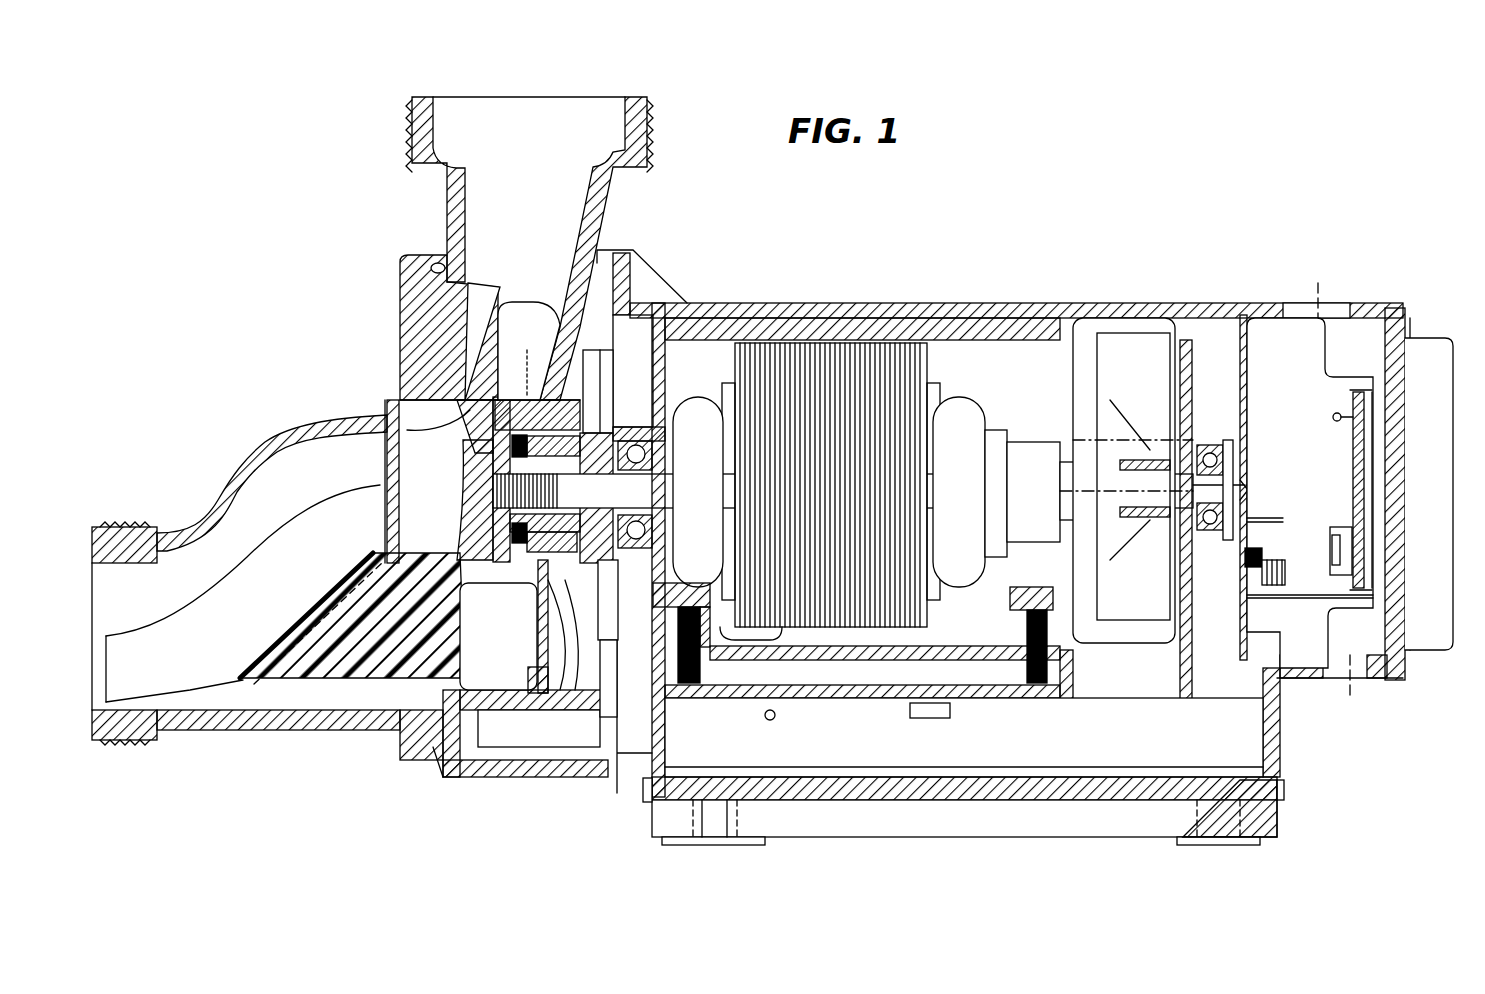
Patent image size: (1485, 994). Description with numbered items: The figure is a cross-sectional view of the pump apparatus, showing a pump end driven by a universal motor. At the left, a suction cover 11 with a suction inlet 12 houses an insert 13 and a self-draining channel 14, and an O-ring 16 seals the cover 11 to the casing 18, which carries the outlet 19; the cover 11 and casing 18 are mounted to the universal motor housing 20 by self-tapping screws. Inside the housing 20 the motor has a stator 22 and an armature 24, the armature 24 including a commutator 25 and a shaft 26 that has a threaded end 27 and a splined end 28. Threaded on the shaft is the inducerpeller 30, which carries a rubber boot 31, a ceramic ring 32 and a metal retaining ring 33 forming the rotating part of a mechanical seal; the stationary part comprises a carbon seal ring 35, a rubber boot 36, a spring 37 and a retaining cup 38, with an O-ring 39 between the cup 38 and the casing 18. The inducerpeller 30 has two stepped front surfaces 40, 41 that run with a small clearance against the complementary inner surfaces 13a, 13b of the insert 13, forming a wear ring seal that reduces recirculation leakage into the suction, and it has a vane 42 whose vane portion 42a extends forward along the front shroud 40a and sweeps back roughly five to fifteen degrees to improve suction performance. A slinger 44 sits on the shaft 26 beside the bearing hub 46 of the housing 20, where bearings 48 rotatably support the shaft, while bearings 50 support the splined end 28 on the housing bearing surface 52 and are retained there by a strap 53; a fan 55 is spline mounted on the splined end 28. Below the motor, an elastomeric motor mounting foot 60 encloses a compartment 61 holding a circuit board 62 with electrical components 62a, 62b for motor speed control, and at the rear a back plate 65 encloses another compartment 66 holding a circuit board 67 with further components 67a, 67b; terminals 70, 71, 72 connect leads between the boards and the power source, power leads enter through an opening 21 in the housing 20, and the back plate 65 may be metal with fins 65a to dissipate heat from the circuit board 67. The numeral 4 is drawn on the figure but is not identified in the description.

The section line 4 is at (1169, 514).
The suction cover 11 is at (213, 493).
The suction inlet 12 is at (265, 478).
The insert 13 is at (310, 603).
The inner surface of insert 13a is at (382, 557).
The inner surface of insert 13b is at (480, 587).
The self-draining channel 14 is at (243, 680).
The O-ring 16 is at (433, 760).
The casing 18 is at (447, 205).
The outlet 19 is at (512, 115).
The universal motor housing 20 is at (760, 303).
The opening 21 is at (1325, 305).
The stator 22 is at (870, 343).
The armature 24 is at (960, 423).
The commutator 25 is at (1038, 445).
The shaft 26 is at (657, 493).
The threaded end 27 is at (467, 483).
The splined end 28 is at (1107, 487).
The inducerpeller 30 is at (538, 640).
The rubber boot 31 is at (510, 400).
The ceramic ring 32 is at (513, 400).
The metal retaining ring 33 is at (483, 533).
The carbon seal ring 35 is at (527, 397).
The rubber boot 36 is at (557, 670).
The spring 37 is at (580, 393).
The retaining cup 38 is at (580, 420).
The O-ring 39 is at (573, 670).
The step front surface 40 is at (395, 380).
The front shroud 40a is at (387, 473).
The step front surface 41 is at (405, 363).
The vane 42 is at (472, 447).
The vane portion 42a is at (382, 558).
The slinger 44 is at (603, 577).
The bearing hub 46 is at (605, 650).
The bearings 48 is at (660, 453).
The bearings 50 is at (1240, 477).
The housing bearing surface 52 is at (1217, 570).
The strap 53 is at (1217, 447).
The fan 55 is at (1140, 345).
The elastomeric motor mounting foot 60 is at (1020, 805).
The compartment 61 is at (856, 665).
The circuit board 62 is at (855, 700).
The electrical component 62a is at (940, 712).
The electrical component 62b is at (765, 715).
The back plate 65 is at (1400, 580).
The fins 65a is at (1430, 340).
The compartment 66 is at (1310, 493).
The circuit board 67 is at (1350, 490).
The electrical component 67a is at (1330, 543).
The electrical component 67b is at (1333, 418).
The terminal 70 is at (1277, 623).
The terminal 71 is at (1277, 557).
The terminal 72 is at (1283, 520).